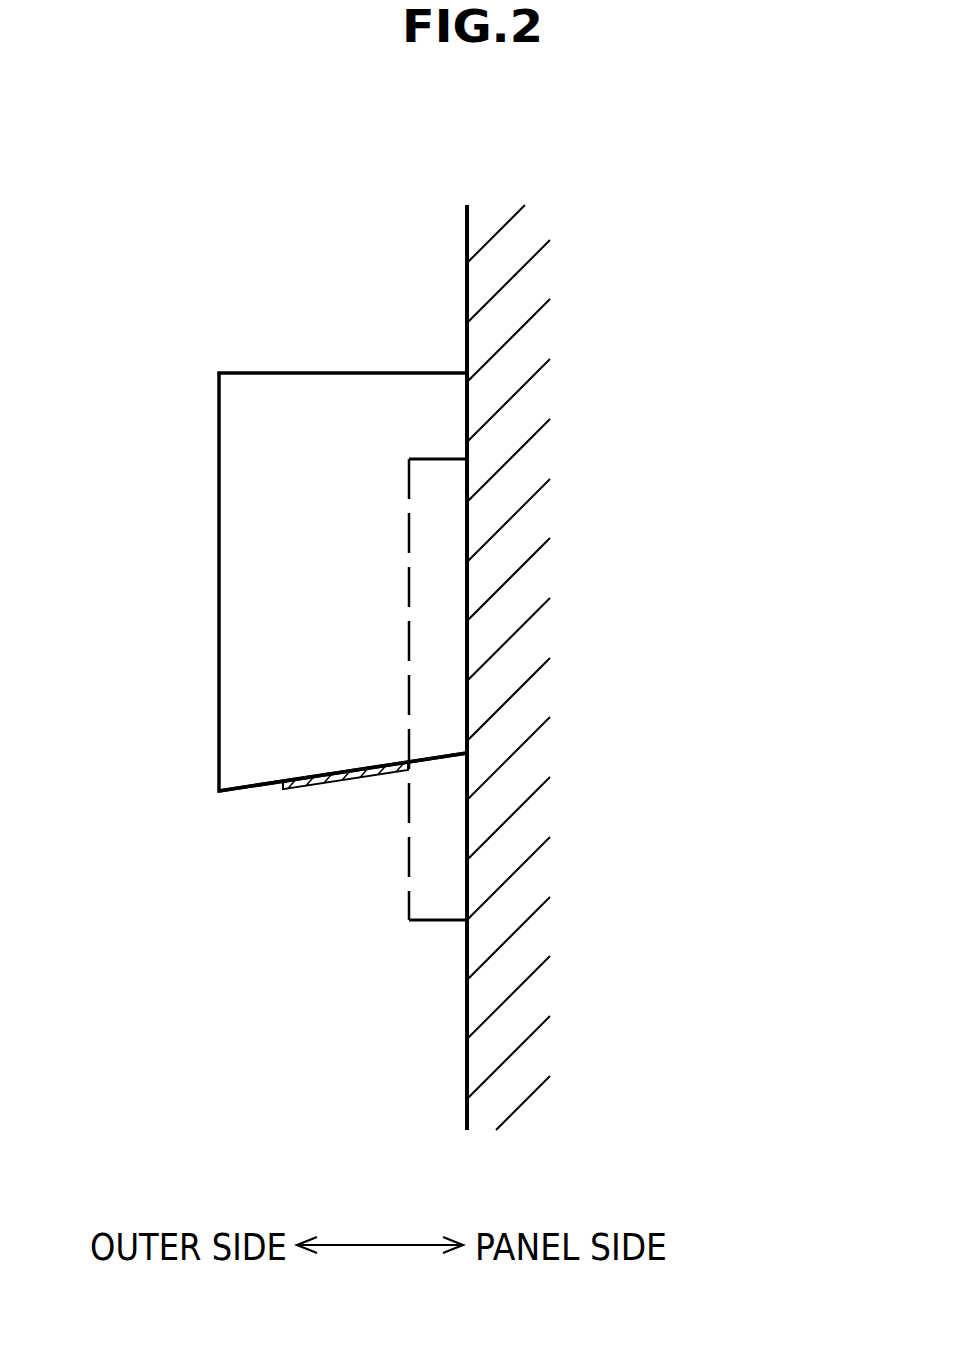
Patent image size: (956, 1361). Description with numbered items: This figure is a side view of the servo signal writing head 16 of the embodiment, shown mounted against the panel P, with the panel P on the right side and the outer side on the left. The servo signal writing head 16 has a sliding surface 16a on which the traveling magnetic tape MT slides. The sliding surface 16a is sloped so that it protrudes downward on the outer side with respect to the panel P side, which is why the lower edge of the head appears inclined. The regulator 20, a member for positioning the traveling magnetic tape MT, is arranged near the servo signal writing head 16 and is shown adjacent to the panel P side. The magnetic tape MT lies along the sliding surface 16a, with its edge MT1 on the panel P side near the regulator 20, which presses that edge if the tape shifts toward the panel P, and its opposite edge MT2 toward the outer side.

The servo signal writing head 16 is at (255, 451).
The sliding surface 16a is at (237, 793).
The regulator 20 is at (427, 600).
The magnetic tape MT is at (327, 790).
The edge on the panel side of the magnetic tape MT1 is at (408, 769).
The outer-side end of mounting tape MT2 is at (287, 791).
The panel P is at (592, 763).